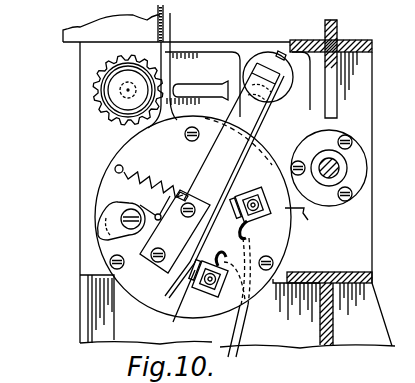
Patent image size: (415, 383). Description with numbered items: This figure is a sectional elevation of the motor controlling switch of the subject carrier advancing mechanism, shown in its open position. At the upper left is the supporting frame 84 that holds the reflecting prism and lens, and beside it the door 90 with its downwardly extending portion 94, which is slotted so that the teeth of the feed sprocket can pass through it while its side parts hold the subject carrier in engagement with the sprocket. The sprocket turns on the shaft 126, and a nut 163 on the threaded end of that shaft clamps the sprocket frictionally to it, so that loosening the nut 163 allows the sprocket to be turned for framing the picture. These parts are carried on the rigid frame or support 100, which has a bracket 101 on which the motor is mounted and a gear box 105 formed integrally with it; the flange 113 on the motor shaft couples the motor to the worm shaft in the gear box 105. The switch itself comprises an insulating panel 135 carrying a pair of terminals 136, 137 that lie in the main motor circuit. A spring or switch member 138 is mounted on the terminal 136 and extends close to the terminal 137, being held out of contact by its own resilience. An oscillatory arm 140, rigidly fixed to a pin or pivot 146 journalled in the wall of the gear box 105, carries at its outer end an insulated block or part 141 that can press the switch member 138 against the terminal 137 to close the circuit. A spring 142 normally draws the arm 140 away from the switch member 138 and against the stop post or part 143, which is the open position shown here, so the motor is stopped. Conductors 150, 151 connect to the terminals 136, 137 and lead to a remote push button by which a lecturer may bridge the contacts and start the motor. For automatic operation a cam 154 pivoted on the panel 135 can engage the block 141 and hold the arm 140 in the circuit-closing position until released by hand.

The supporting frame 84 is at (111, 30).
The door 90 is at (205, 20).
The downwardly extending portion 94 is at (168, 86).
The frame or support 100 is at (217, 182).
The bracket 101 is at (338, 332).
The gear box 105 is at (372, 237).
The flange 113 is at (338, 172).
The shaft 126 is at (125, 90).
The insulating panel 135 is at (193, 217).
The terminal 136 is at (262, 180).
The terminal 137 is at (195, 283).
The spring or switch member 138 is at (248, 233).
The oscillatory arm 140 is at (247, 117).
The block or part 141 is at (175, 231).
The spring 142 is at (181, 151).
The stop post or part 143 is at (142, 183).
The pin or pivot 146 is at (260, 54).
The conductor 150 is at (313, 221).
The conductor 151 is at (127, 325).
The cam 154 is at (100, 228).
The nut 163 is at (110, 78).